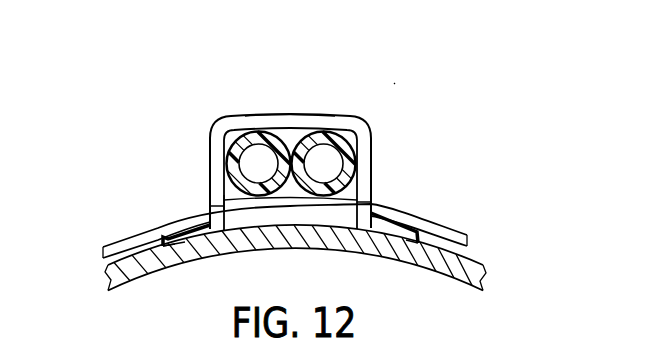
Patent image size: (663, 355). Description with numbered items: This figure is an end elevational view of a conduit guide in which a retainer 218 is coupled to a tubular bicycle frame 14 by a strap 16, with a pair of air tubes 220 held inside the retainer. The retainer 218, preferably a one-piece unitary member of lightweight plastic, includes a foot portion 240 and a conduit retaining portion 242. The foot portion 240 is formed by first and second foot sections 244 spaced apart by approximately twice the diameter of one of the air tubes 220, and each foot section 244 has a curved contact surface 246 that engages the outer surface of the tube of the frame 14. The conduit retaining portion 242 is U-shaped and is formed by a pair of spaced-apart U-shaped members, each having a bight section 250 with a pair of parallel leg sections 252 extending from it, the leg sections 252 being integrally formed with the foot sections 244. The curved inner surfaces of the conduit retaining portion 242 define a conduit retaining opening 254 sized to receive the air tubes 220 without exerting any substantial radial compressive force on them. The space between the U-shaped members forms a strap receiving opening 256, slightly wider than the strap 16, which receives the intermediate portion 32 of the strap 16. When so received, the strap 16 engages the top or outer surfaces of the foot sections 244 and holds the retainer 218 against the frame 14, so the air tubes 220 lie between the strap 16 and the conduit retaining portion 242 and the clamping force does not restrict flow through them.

The bicycle frame 14 is at (476, 252).
The strap 16 is at (461, 223).
The intermediate portion 32 is at (278, 206).
The retainer 218 is at (392, 84).
The air tubes 220 is at (294, 160).
The foot portion 240 is at (185, 243).
The conduit retaining portion 242 is at (374, 129).
The foot sections 244 is at (173, 219).
The curved contact surface 246 is at (220, 252).
The bight section 250 is at (275, 113).
The leg sections 252 is at (210, 148).
The conduit retaining opening 254 is at (222, 198).
The strap receiving opening 256 is at (217, 207).